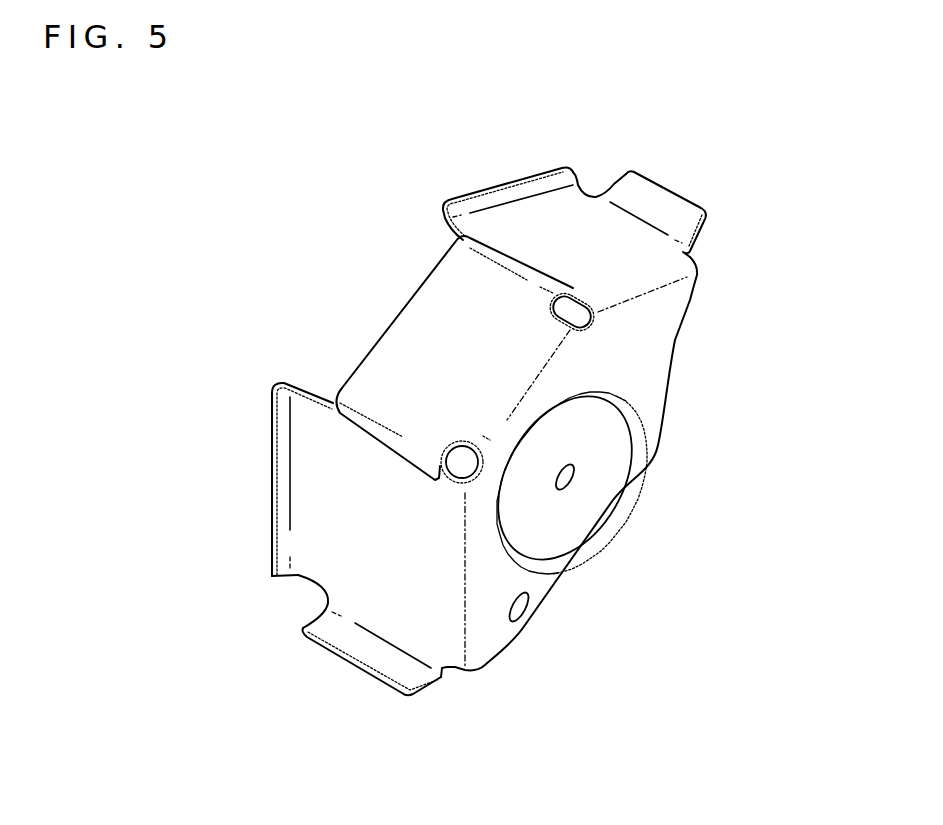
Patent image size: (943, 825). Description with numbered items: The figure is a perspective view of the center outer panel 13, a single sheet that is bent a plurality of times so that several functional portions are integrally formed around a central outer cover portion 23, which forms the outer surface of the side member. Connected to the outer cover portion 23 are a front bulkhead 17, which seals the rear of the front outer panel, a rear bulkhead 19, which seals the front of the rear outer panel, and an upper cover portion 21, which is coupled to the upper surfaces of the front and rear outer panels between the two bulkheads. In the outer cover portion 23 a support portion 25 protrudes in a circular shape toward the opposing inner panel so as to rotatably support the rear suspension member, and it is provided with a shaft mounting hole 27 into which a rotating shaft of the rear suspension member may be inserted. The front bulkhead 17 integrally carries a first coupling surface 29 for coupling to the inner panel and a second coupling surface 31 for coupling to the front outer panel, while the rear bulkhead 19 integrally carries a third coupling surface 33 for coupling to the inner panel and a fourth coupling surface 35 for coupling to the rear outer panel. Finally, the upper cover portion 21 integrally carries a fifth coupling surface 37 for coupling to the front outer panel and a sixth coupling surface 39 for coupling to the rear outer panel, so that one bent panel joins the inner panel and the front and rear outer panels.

The center outer panel 13 is at (433, 271).
The front bulkhead 17 is at (351, 537).
The rear bulkhead 19 is at (591, 224).
The upper cover portion 21 is at (440, 344).
The outer cover portion 23 is at (640, 347).
The support portion 25 is at (603, 467).
The shaft mounting hole 27 is at (577, 480).
The first coupling surface 29 is at (283, 493).
The second coupling surface 31 is at (364, 646).
The third coupling surface 33 is at (485, 204).
The fourth coupling surface 35 is at (662, 208).
The fifth coupling surface 37 is at (363, 433).
The sixth coupling surface 39 is at (522, 264).